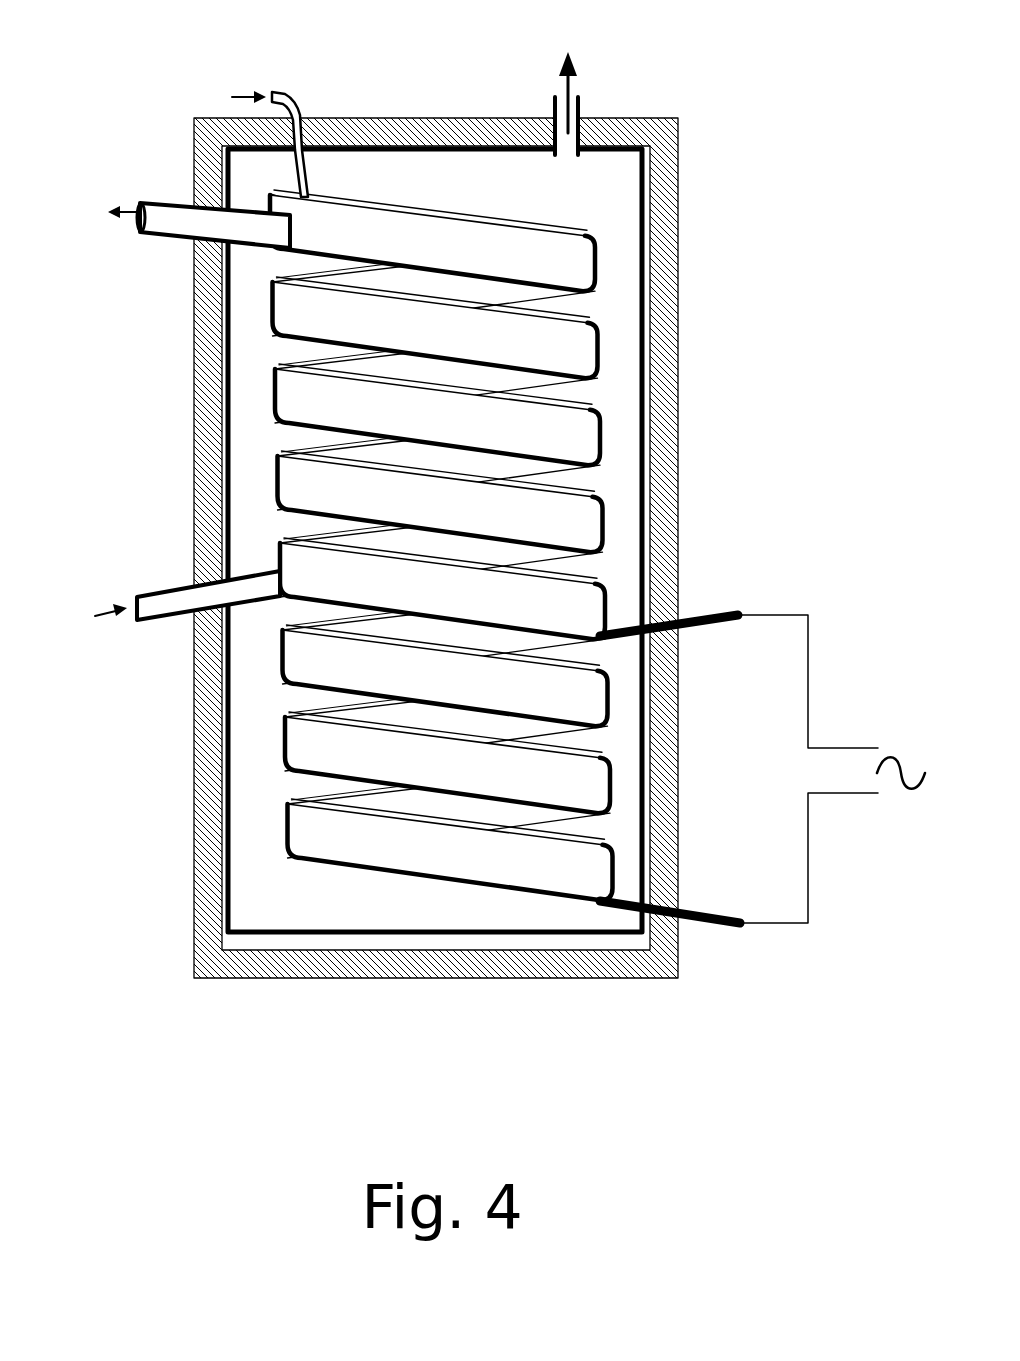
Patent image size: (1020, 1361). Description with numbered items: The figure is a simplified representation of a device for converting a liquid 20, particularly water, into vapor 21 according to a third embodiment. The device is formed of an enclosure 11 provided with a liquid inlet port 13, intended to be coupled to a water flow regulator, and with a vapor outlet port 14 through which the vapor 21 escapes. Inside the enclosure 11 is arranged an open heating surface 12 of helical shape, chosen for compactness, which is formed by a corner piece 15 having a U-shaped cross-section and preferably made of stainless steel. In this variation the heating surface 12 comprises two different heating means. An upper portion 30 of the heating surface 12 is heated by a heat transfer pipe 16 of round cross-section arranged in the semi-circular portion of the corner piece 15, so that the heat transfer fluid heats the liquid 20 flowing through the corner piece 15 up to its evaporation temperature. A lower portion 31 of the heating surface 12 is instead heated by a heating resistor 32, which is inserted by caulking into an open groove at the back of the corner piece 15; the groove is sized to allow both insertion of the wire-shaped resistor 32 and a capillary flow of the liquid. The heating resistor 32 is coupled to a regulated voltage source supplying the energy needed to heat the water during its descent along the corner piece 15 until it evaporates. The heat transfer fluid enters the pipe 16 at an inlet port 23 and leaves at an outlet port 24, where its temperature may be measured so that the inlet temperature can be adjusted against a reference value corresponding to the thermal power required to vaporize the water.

The enclosure 11 is at (437, 910).
The heating surface 12 is at (457, 873).
The liquid inlet port 13 is at (290, 98).
The vapor outlet port 14 is at (580, 98).
The corner piece 15 is at (319, 652).
The heat transfer pipe 16 is at (160, 590).
The liquid 20 is at (223, 97).
The vapor 21 is at (568, 74).
The inlet port of heat transfer fluid 23 is at (82, 615).
The outlet port of heat transfer fluid 24 is at (176, 219).
The upper portion of heating surface 30 is at (160, 550).
The lower portion of heating surface 31 is at (160, 892).
The heating resistor 32 is at (693, 612).